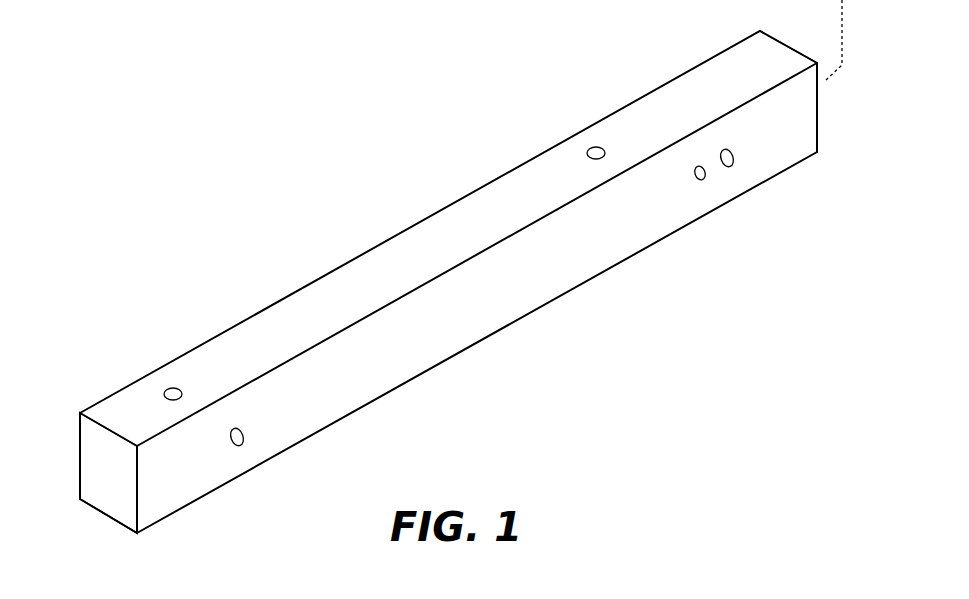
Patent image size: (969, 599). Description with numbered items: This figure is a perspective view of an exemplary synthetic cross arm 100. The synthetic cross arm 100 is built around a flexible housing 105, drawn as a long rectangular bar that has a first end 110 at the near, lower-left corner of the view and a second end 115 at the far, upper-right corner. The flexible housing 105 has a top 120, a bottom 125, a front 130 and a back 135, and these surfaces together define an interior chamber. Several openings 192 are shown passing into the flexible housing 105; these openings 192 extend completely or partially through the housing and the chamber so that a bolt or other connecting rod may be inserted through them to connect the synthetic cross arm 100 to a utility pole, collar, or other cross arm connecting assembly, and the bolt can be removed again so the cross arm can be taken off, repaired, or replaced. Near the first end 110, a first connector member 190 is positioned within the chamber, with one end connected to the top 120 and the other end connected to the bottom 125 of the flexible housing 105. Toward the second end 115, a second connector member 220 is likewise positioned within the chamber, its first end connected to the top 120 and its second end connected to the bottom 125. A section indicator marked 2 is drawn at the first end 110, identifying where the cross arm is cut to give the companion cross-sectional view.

The synthetic cross arm 100 is at (440, 104).
The flexible housing 105 is at (400, 245).
The first end 110 is at (98, 447).
The second end 115 is at (818, 117).
The top 120 is at (137, 400).
The bottom 125 is at (118, 527).
The front 130 is at (188, 497).
The back 135 is at (77, 487).
The section line 2 is at (100, 513).
The first connector member 190 is at (172, 387).
The openings 192 is at (238, 447).
The second connector member 220 is at (596, 147).